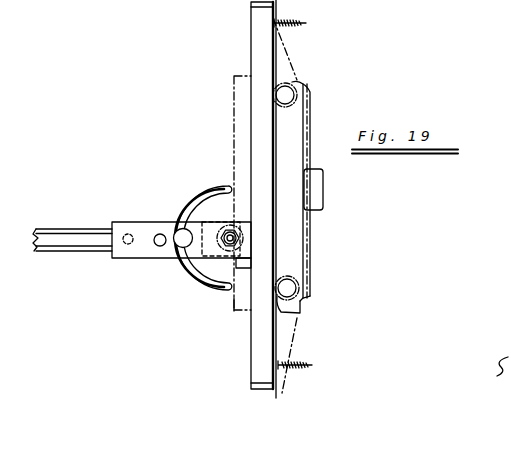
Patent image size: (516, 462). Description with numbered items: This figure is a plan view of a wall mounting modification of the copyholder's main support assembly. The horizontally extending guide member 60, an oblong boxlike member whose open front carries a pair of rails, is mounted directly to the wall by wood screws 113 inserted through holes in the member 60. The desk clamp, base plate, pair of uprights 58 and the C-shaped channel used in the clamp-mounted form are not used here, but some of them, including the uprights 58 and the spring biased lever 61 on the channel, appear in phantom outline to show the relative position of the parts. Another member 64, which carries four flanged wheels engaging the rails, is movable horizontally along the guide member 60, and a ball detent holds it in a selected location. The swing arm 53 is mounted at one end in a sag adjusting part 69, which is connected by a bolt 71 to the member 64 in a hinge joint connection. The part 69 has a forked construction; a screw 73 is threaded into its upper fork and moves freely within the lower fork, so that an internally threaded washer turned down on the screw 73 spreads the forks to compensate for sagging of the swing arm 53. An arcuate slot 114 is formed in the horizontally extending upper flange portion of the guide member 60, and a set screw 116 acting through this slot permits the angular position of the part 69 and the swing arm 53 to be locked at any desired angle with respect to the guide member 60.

The swing arm 53 is at (83, 225).
The uprights 58 is at (292, 79).
The guide member 60 is at (249, 331).
The spring biased lever 61 is at (306, 206).
The member 64 is at (250, 189).
The sag adjusting part 69 is at (137, 264).
The bolt 71 is at (228, 249).
The screw 73 is at (128, 233).
The wood screws 113 is at (305, 22).
The arcuate slot 114 is at (222, 190).
The set screw 116 is at (182, 248).